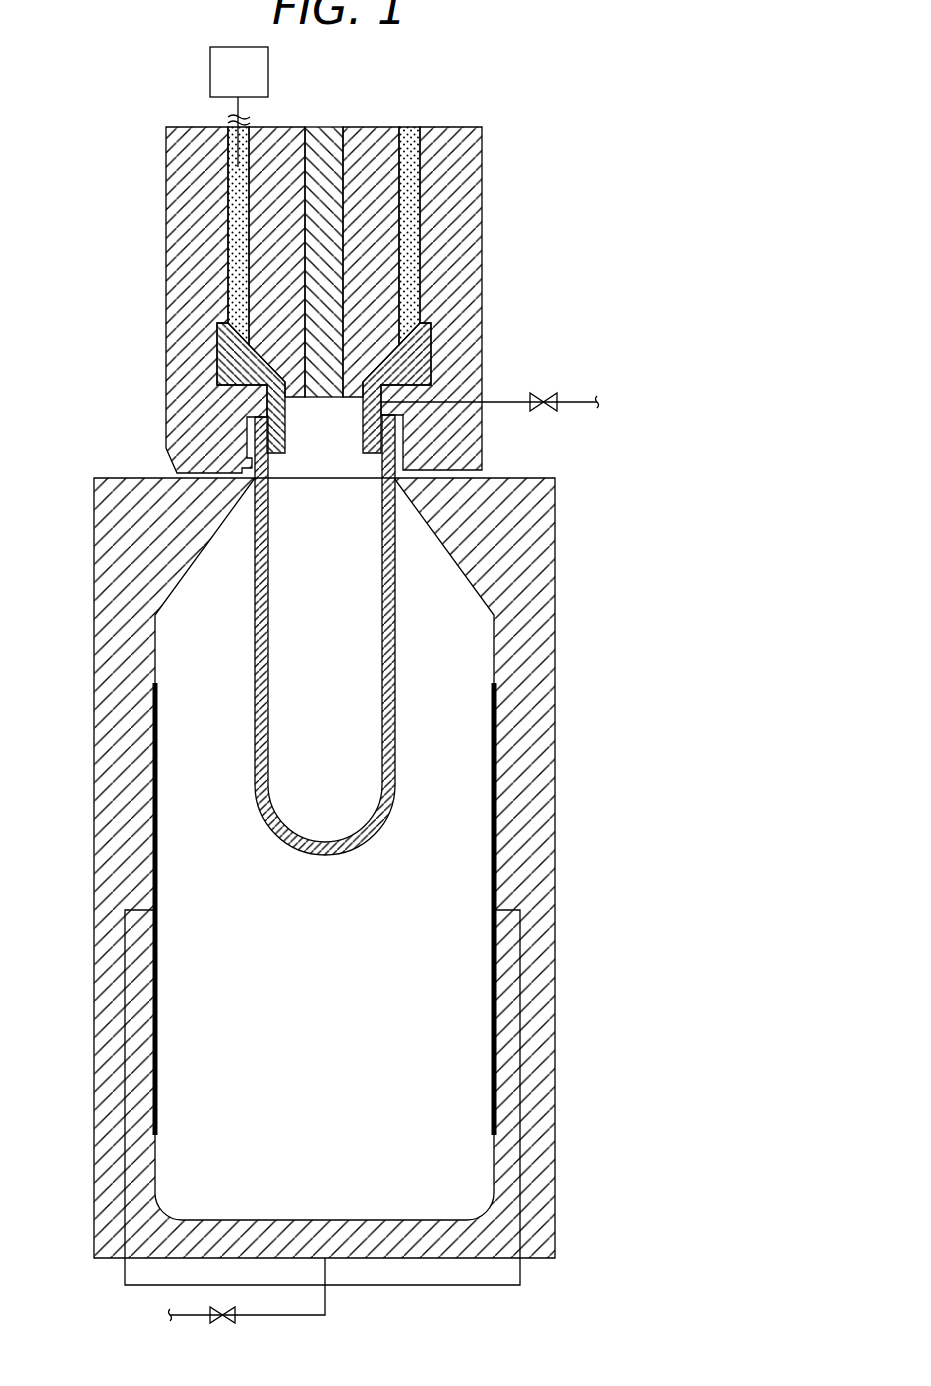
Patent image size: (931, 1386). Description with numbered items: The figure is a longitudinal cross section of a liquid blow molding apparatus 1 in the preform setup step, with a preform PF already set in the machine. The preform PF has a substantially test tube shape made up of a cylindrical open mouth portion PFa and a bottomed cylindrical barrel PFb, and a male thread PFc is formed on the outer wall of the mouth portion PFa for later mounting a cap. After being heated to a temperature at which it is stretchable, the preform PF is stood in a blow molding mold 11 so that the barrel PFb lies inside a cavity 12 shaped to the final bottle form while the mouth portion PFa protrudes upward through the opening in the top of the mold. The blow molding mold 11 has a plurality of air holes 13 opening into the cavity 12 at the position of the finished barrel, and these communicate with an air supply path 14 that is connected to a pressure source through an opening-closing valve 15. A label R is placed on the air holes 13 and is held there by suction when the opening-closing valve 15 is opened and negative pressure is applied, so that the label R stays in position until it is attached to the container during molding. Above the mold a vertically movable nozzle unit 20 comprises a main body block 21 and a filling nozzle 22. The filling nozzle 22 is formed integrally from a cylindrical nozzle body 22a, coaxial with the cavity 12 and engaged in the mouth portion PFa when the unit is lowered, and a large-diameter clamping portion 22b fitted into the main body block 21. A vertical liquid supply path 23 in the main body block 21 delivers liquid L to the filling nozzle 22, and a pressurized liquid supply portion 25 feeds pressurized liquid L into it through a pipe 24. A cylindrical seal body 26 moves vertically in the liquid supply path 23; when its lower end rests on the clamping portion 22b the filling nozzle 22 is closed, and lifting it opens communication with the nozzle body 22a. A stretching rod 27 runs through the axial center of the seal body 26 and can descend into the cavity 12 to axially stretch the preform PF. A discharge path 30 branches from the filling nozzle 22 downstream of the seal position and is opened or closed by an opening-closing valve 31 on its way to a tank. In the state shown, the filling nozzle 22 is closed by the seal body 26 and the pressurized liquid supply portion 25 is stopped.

The liquid blow molding apparatus 1 is at (556, 184).
The blow molding mold 11 is at (555, 525).
The cavity 12 is at (338, 1037).
The air holes 13 is at (157, 908).
The air supply path 14 is at (400, 1285).
The opening-closing valve 15 is at (232, 1316).
The nozzle unit 20 is at (483, 150).
The main body block 21 is at (462, 220).
The filling nozzle 22 is at (432, 352).
The nozzle body 22a is at (277, 433).
The clamping portion 22b is at (222, 348).
The liquid supply path 23 is at (238, 190).
The pipe 24 is at (238, 101).
The pressurized liquid supply portion 25 is at (268, 70).
The seal body 26 is at (265, 240).
The stretching rod 27 is at (337, 192).
The discharge path 30 is at (435, 400).
The opening-closing valve 31 is at (557, 404).
The liquid L is at (410, 262).
The preform PF is at (395, 612).
The mouth portion PFa is at (390, 440).
The barrel PFb is at (392, 655).
The male thread PFc is at (255, 456).
The label R is at (498, 820).